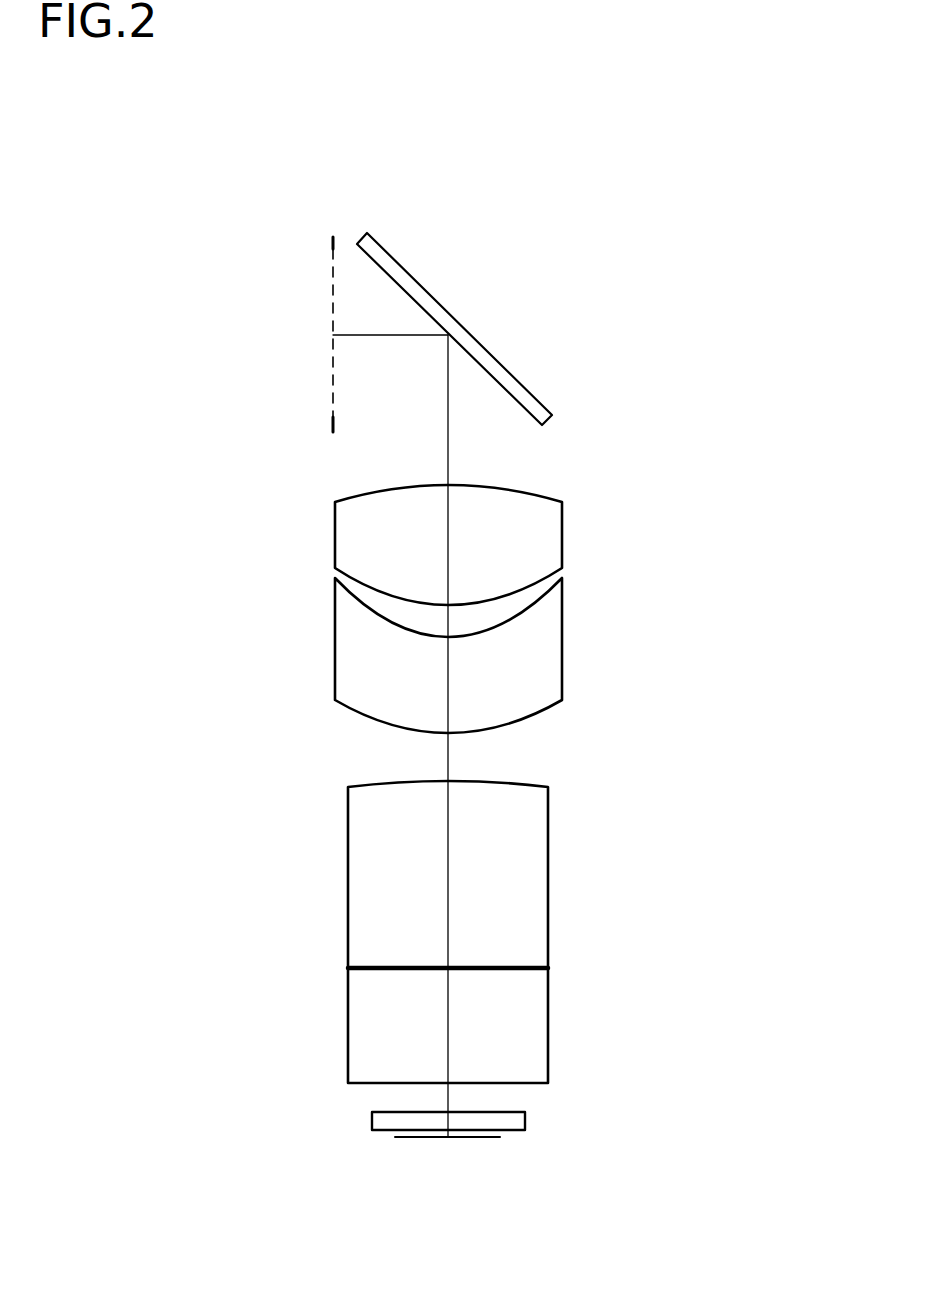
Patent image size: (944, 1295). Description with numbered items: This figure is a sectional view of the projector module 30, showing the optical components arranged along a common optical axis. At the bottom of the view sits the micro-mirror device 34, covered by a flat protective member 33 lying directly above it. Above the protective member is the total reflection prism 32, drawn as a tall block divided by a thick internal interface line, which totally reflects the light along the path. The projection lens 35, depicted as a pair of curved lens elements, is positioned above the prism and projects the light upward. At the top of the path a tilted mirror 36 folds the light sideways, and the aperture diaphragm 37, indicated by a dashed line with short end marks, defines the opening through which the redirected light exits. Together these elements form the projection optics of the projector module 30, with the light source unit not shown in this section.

The projector module 30 is at (699, 321).
The total reflection prism 32 is at (587, 790).
The protective member 33 is at (527, 1122).
The micro-mirror device 34 is at (480, 1140).
The projection lens 35 is at (548, 620).
The mirror 36 is at (420, 287).
The aperture diaphragm 37 is at (328, 247).